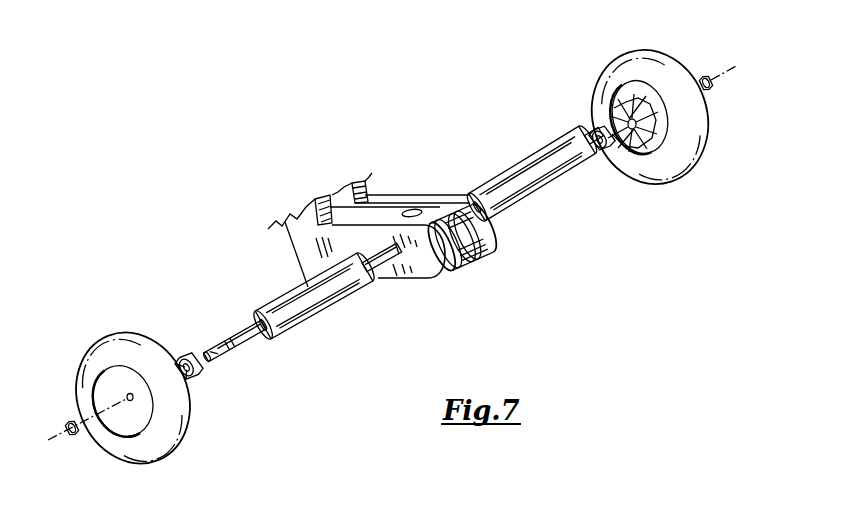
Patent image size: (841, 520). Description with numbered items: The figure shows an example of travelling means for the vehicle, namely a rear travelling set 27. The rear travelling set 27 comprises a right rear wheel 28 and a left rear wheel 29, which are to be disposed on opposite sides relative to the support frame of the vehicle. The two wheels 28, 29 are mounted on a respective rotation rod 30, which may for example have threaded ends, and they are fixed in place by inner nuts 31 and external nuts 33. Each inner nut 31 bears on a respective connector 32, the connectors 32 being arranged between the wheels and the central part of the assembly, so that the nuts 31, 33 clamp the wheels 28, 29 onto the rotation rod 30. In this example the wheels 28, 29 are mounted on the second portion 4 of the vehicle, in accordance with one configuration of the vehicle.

The second portion 4 is at (421, 268).
The rear travelling set 27 is at (244, 122).
The right rear wheel 28 is at (592, 97).
The left rear wheel 29 is at (134, 345).
The rotation rod 30 is at (253, 340).
The inner nut 31 is at (190, 355).
The connector 32 is at (291, 290).
The external nut 33 is at (68, 420).